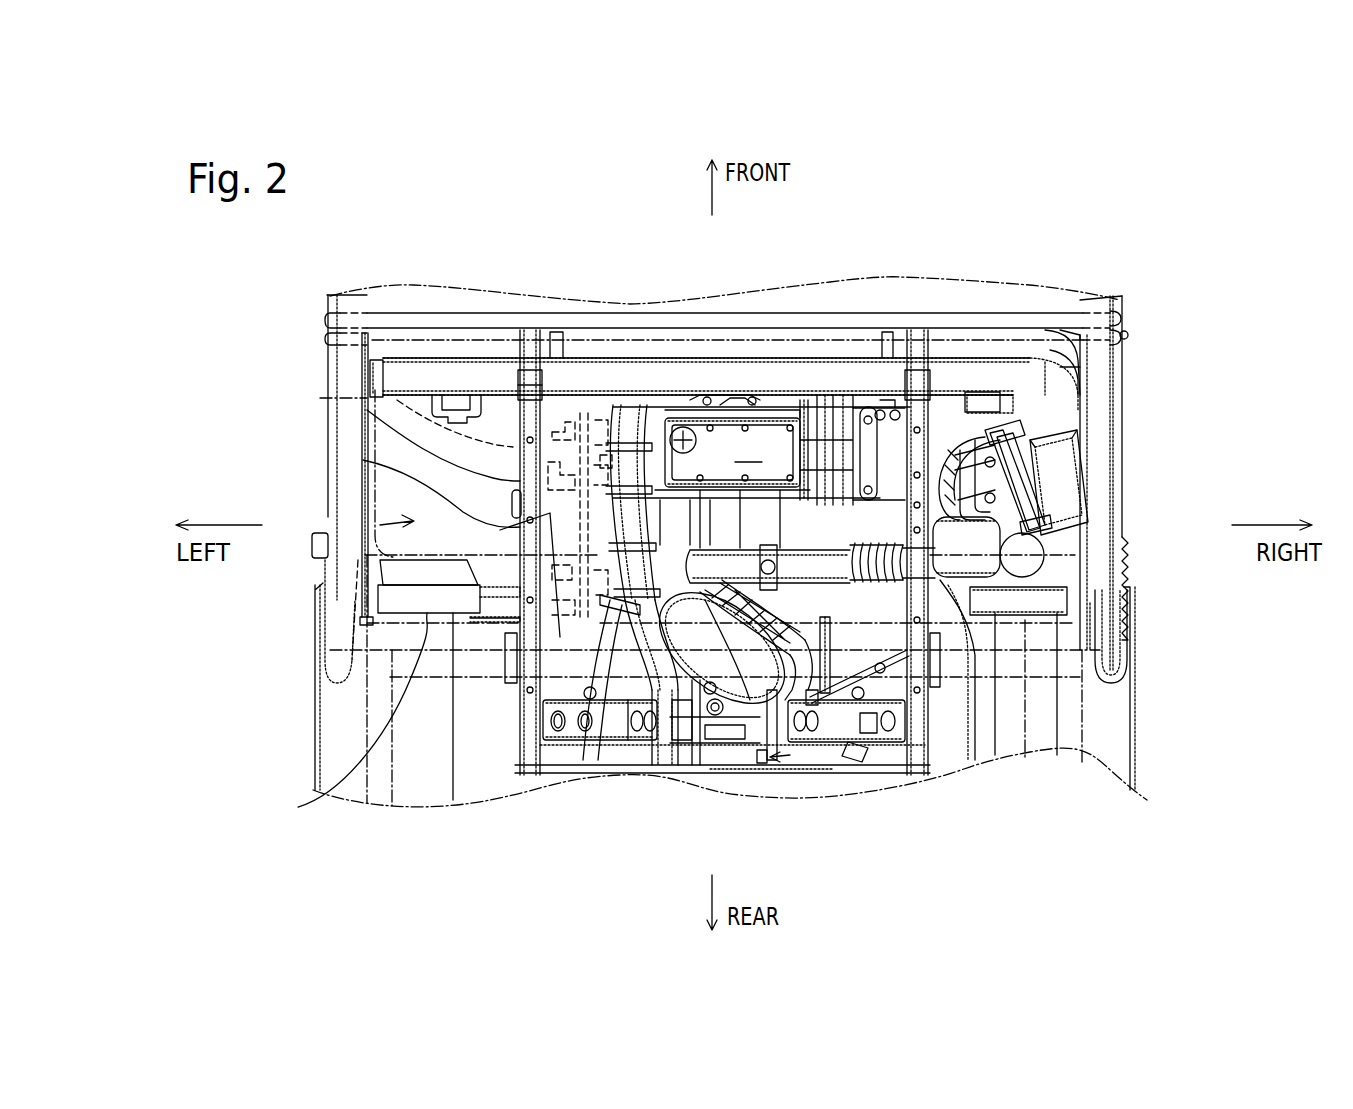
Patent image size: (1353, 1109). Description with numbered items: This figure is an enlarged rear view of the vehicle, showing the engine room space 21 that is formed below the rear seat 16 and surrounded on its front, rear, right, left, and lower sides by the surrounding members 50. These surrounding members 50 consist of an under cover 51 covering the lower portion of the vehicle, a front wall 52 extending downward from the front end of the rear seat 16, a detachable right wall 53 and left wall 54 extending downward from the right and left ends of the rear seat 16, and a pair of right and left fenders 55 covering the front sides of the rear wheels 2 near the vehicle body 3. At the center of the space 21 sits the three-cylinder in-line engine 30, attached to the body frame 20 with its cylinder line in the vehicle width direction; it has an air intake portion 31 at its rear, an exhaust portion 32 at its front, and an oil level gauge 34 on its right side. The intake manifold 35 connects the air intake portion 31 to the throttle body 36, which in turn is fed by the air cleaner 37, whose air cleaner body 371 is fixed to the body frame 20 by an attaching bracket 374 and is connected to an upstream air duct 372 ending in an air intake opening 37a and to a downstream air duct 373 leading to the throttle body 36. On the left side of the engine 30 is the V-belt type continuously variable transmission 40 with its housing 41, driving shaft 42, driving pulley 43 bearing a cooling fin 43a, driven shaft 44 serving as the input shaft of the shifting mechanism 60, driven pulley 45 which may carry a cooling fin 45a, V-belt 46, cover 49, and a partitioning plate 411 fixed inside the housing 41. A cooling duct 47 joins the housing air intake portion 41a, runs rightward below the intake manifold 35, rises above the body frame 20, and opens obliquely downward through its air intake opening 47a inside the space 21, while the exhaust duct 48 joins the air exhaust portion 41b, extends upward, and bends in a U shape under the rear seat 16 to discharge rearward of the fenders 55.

The rear wheels 2 is at (315, 717).
The fender 3 is at (335, 668).
The rear seat 16 is at (368, 312).
The body frame 20 is at (1078, 452).
The space 21 is at (392, 557).
The engine 30 is at (761, 477).
The air intake portion 31 is at (800, 400).
The exhaust portion 32 is at (752, 395).
The oil level gauge 34 is at (863, 392).
The intake manifold 35 is at (710, 757).
The throttle body 36 is at (862, 750).
The air cleaner 37 is at (1050, 422).
The air intake opening 37a is at (1125, 585).
The V-belt type continuously variable transmission 40 is at (367, 410).
The housing 41 is at (647, 747).
The air intake portion 41a is at (650, 405).
The air exhaust portion 41b is at (680, 748).
The driving shaft 42 is at (370, 384).
The driving pulley 43 is at (562, 365).
The cooling fin 43a is at (627, 410).
The driven shaft 44 is at (530, 770).
The driven pulley 45 is at (615, 740).
The cooling fin 45a is at (567, 768).
The V-belt 46 is at (595, 410).
The cooling duct 47 is at (950, 625).
The air intake opening 47a is at (1122, 612).
The exhaust duct 48 is at (755, 740).
The cover 49 is at (363, 460).
The surrounding members 50 is at (1172, 262).
The under cover 51 is at (1073, 330).
The front wall 52 is at (460, 330).
The right wall 53 is at (1118, 363).
The left wall 54 is at (335, 353).
The fenders 55 is at (1025, 613).
The shifting mechanism 60 is at (812, 745).
The air cleaner body 371 is at (1057, 478).
The upstream air duct 372 is at (1065, 548).
The downstream air duct 373 is at (893, 580).
The attaching bracket 374 is at (993, 403).
The partitioning plate 411 is at (515, 385).